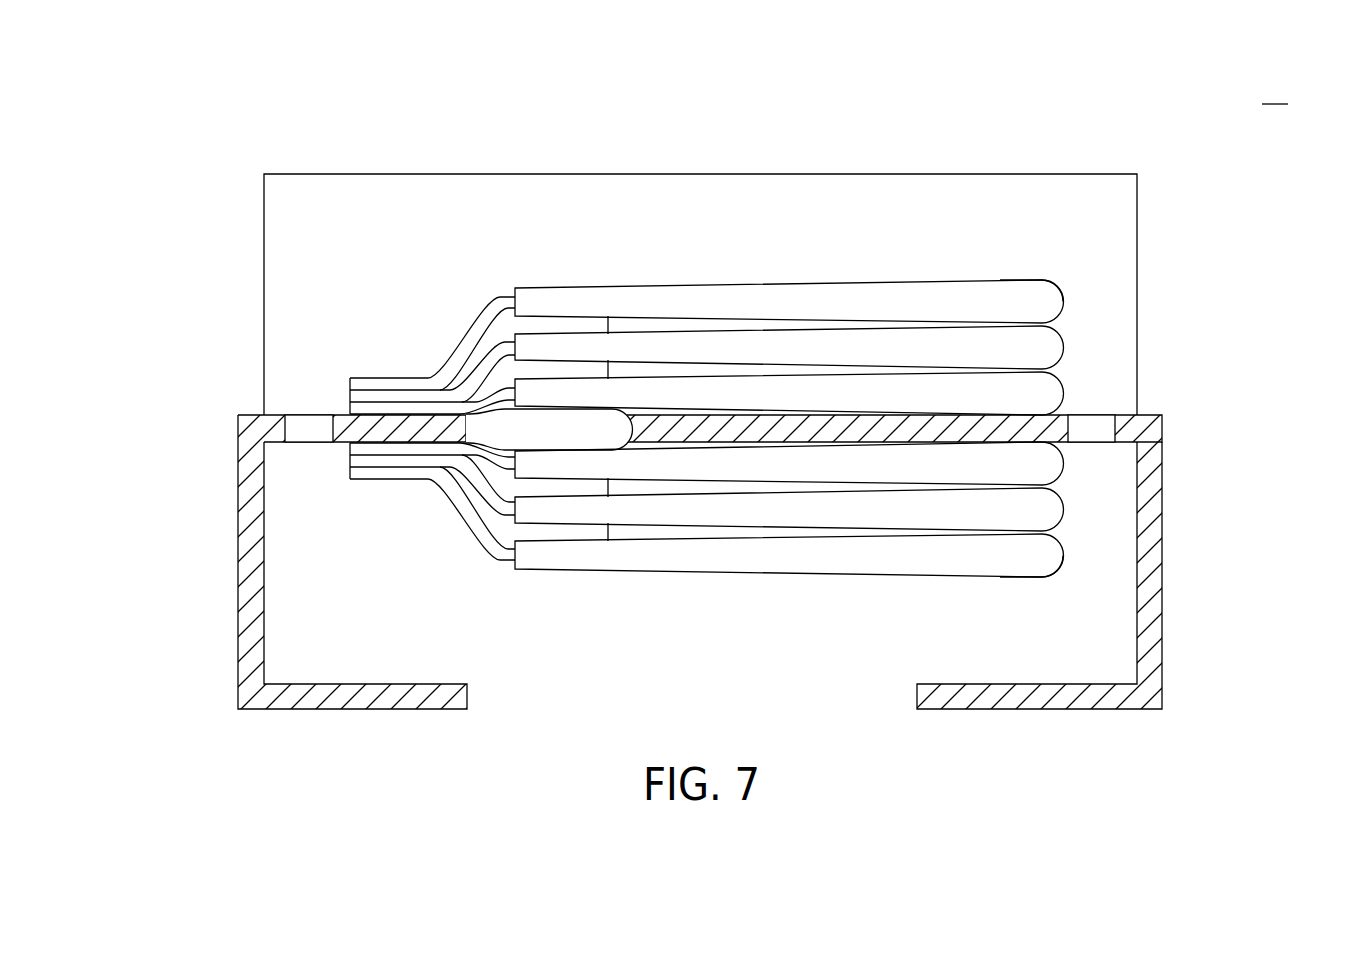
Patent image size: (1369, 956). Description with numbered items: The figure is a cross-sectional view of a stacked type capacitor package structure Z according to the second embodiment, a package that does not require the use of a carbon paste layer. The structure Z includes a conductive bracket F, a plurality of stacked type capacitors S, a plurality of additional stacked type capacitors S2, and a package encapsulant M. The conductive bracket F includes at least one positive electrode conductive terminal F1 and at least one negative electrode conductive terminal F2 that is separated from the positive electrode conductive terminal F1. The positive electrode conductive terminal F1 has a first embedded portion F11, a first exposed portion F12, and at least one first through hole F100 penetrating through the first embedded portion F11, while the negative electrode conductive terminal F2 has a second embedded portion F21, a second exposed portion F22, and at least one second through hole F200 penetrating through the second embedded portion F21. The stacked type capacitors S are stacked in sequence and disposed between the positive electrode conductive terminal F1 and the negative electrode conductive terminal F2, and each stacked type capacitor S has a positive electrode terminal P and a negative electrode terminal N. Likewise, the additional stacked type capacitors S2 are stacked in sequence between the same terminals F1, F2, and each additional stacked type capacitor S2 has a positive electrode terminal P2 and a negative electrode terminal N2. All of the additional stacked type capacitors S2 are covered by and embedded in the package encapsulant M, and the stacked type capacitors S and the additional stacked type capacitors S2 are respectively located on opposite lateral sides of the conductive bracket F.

The package encapsulant M is at (521, 168).
The conductive bracket F is at (701, 391).
The positive electrode conductive terminal F1 is at (269, 544).
The negative electrode conductive terminal F2 is at (979, 544).
The first embedded portion F11 is at (390, 427).
The first exposed portion F12 is at (247, 504).
The second embedded portion F21 is at (1010, 428).
The second exposed portion F22 is at (1147, 507).
The first through hole F100 is at (309, 432).
The second through hole F200 is at (1090, 432).
The positive electrode terminal P is at (394, 364).
The positive electrode terminal P2 is at (394, 493).
The stacked type capacitor S is at (817, 372).
The additional stacked type capacitor S2 is at (817, 485).
The negative electrode terminal N is at (1000, 268).
The negative electrode terminal N2 is at (1000, 589).
The stacked type capacitor package structure Z is at (1275, 89).